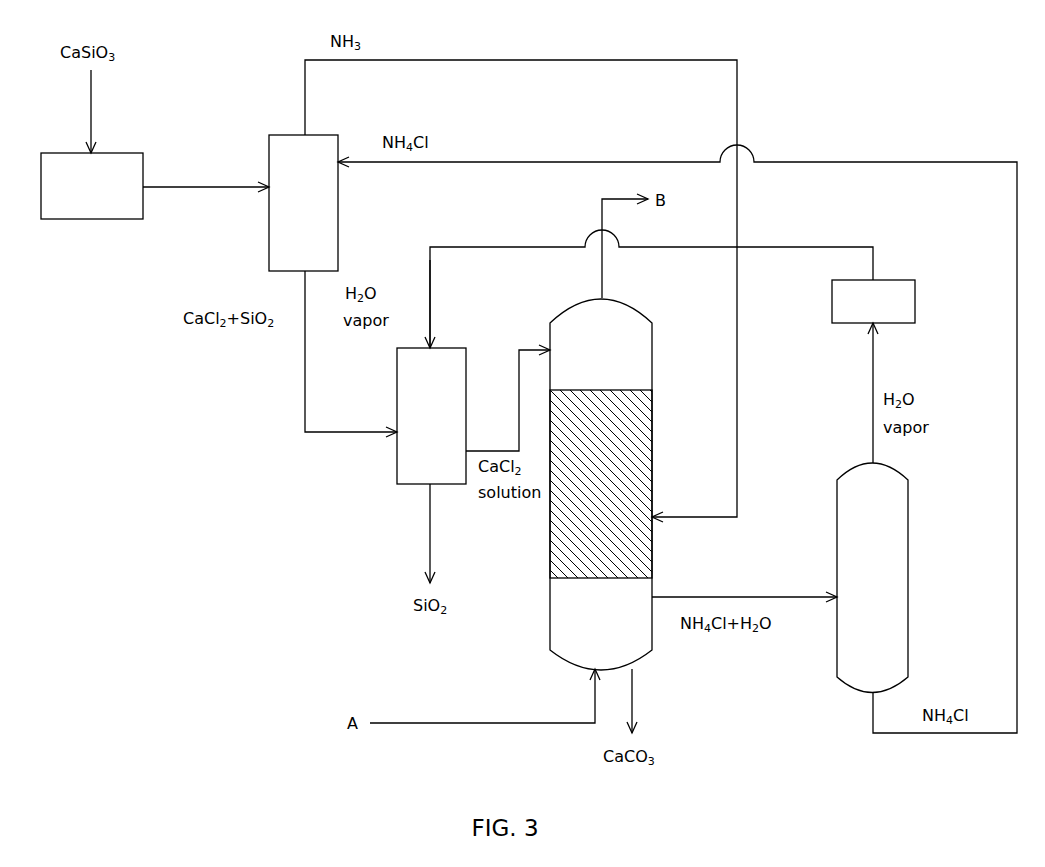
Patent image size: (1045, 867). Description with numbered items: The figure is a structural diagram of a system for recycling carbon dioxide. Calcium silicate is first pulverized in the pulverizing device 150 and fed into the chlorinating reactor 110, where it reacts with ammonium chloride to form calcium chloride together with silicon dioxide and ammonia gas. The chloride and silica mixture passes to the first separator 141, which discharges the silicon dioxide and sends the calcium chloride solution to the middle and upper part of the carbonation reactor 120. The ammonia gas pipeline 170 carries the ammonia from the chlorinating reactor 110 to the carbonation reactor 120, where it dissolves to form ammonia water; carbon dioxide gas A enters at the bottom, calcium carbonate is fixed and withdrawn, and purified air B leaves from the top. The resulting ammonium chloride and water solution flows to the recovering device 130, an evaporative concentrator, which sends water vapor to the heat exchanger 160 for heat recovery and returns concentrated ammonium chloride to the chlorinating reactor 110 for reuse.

The chlorinating reactor 110 is at (303, 203).
The carbonation reactor 120 is at (601, 484).
The recovering device 130 is at (872, 578).
The first separator 141 is at (431, 416).
The pulverizing device 150 is at (92, 186).
The heat exchanger 160 is at (873, 301).
The ammonia gas pipeline 170 is at (560, 60).